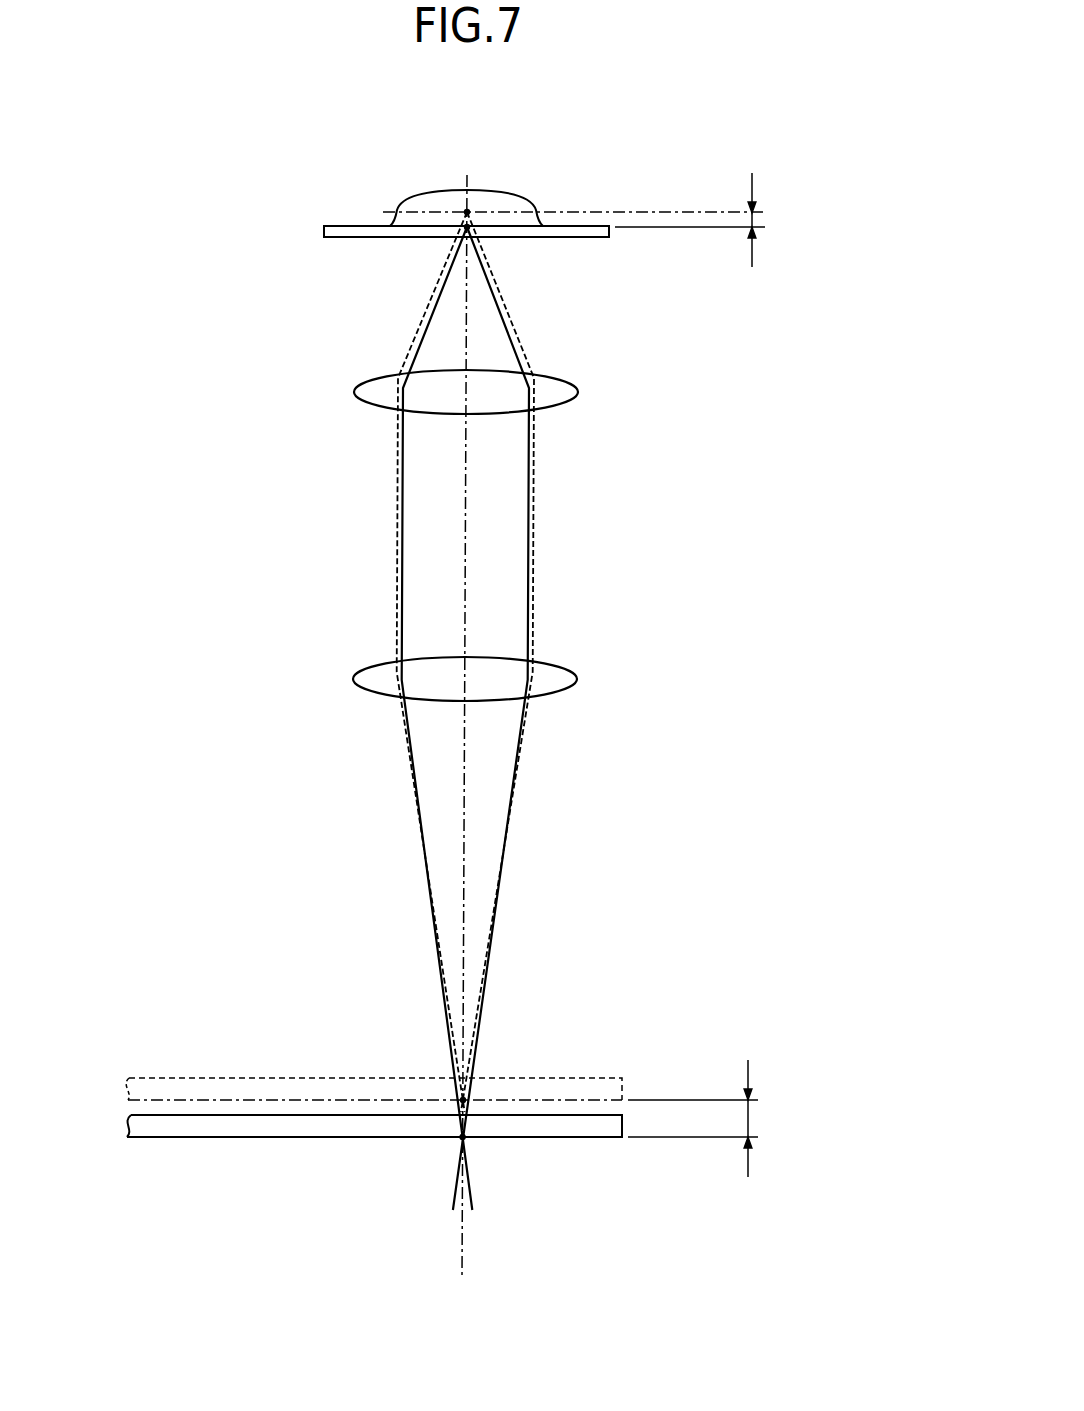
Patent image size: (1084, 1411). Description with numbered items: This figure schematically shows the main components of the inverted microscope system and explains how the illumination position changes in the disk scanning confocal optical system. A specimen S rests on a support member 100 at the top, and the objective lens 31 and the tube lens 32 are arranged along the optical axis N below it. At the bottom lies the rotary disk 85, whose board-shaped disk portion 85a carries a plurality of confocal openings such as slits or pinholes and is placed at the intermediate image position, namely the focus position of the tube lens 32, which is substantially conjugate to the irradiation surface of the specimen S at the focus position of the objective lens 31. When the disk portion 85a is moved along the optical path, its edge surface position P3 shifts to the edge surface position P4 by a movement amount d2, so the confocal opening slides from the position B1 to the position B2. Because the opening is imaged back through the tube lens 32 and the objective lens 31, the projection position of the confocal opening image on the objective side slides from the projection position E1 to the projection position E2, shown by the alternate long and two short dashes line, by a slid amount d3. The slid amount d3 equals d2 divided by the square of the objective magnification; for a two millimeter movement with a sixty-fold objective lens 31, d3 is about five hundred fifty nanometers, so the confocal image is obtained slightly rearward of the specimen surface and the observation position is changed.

The slide glass 100 is at (340, 225).
The specimen S is at (493, 196).
The projection position E1 is at (470, 229).
The projection position E2 is at (467, 210).
The slid amount of the conjugate position d3 is at (755, 220).
The objective lens 31 is at (579, 392).
The tube lens 32 is at (577, 679).
The optical axis N is at (466, 533).
The rotary disk 85 is at (549, 1148).
The disk portion 85a is at (203, 1078).
The position of the confocal opening B1 is at (461, 1140).
The position of the confocal opening B2 is at (462, 1098).
The edge surface position of the disk portion P3 is at (685, 1137).
The edge surface position of the disk portion P4 is at (677, 1100).
The movement amount of the disk portion d2 is at (750, 1118).